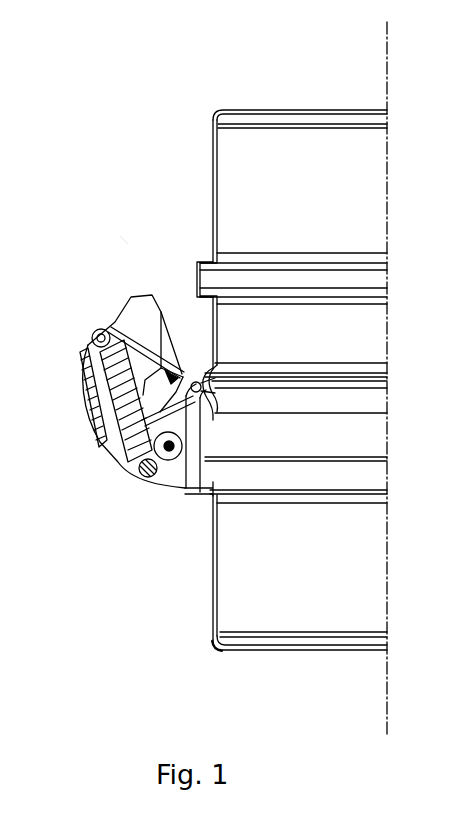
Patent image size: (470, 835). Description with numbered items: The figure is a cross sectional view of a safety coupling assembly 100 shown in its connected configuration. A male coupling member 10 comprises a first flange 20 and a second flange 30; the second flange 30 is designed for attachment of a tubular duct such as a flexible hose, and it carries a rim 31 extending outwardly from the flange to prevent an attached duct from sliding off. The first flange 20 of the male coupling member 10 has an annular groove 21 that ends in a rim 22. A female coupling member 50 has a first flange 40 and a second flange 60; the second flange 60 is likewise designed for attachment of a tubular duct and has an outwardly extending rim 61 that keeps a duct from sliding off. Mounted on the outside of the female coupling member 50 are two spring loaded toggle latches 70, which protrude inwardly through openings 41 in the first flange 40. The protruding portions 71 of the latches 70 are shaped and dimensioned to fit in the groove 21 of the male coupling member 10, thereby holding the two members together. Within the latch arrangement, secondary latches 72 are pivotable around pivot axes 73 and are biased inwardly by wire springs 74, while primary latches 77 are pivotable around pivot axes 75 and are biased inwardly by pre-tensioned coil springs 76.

The safety coupling assembly 100 is at (127, 244).
The male coupling member 10 is at (207, 573).
The first flange 20 is at (280, 445).
The annular groove 21 is at (216, 404).
The rim 22 is at (212, 383).
The second flange 30 is at (293, 588).
The rim 31 is at (232, 643).
The first flange 40 is at (393, 370).
The openings 41 is at (165, 497).
The female coupling member 50 is at (207, 174).
The second flange 60 is at (270, 220).
The rim 61 is at (219, 108).
The spring loaded toggle latches 70 is at (105, 418).
The protruding portions 71 is at (205, 433).
The secondary latches 72 is at (106, 440).
The pivot axes 73 is at (116, 460).
The wire springs 74 is at (134, 345).
The pivot axes 75 is at (85, 371).
The pre-tensioned coil springs 76 is at (105, 401).
The primary latches 77 is at (94, 330).